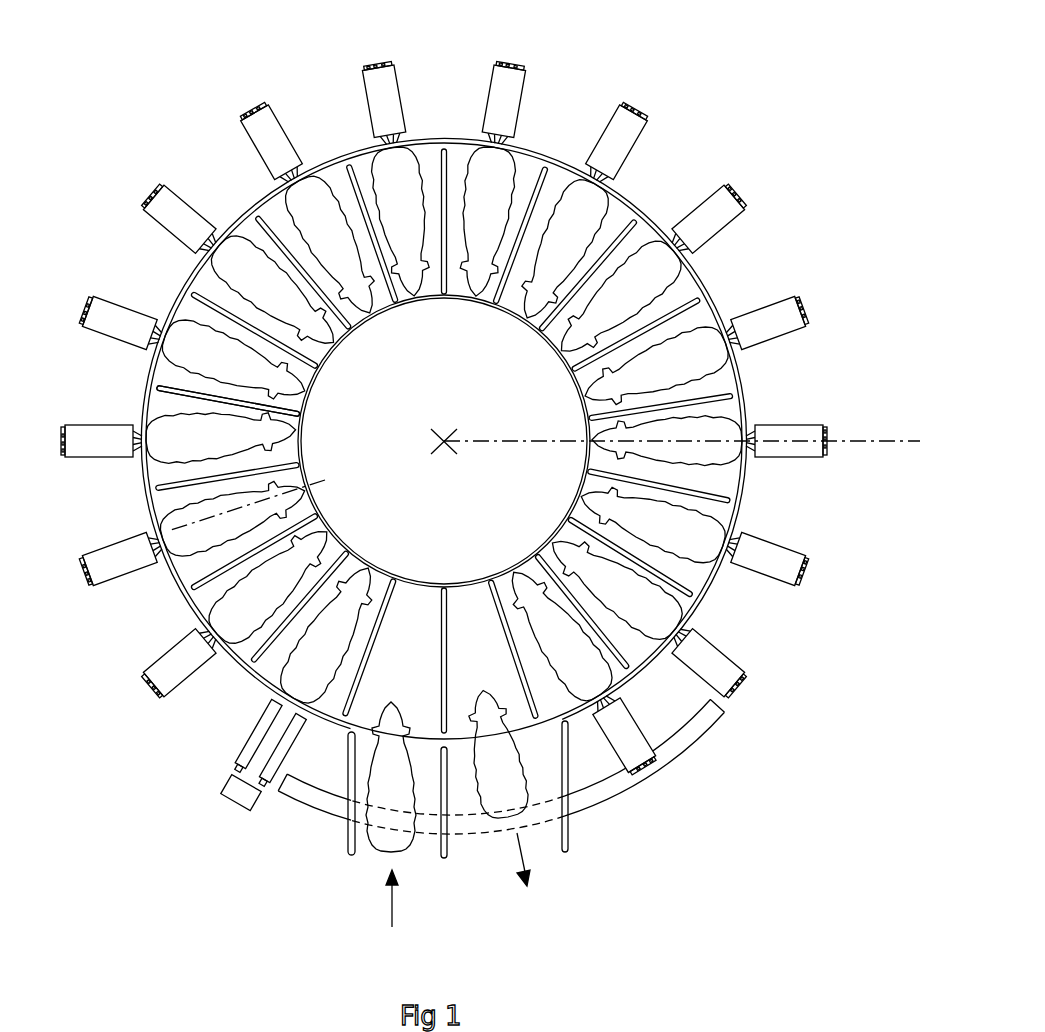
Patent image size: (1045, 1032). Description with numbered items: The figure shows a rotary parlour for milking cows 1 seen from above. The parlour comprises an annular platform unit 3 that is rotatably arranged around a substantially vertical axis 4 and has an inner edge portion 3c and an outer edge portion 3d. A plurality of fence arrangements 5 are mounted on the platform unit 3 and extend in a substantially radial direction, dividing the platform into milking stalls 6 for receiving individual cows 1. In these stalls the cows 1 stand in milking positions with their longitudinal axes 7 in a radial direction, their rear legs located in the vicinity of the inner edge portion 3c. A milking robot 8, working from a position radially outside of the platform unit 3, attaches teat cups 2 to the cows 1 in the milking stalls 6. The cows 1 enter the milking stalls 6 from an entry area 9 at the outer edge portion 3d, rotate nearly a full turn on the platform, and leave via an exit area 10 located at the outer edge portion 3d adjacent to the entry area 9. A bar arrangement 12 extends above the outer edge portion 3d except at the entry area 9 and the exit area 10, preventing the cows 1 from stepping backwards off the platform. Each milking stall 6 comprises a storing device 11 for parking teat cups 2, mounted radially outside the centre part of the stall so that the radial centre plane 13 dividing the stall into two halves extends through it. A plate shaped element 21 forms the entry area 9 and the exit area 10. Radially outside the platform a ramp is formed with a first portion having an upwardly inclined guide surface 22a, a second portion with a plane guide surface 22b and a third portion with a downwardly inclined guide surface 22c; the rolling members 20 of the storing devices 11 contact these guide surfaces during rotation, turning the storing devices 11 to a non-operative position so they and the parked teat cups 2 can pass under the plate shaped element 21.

The cow 1 is at (320, 662).
The teat cups 2 is at (688, 635).
The annular platform unit 3 is at (155, 470).
The inner edge portion 3c is at (303, 405).
The outer edge portion 3d is at (187, 272).
The vertical axis 4 is at (444, 441).
The fence arrangements 5 is at (498, 600).
The milking stalls 6 is at (347, 573).
The longitudinal axis 7 is at (193, 532).
The milking robot 8 is at (238, 795).
The entry area 9 is at (368, 760).
The exit area 10 is at (542, 763).
The storing device 11 is at (716, 666).
The bar arrangement 12 is at (723, 310).
The radial centre plane 13 is at (717, 442).
The rolling members 20 is at (745, 695).
The plate shaped element 21 is at (470, 792).
The upwardly inclined guide surface 22a is at (683, 738).
The plane guide surface 22b is at (578, 805).
The downwardly inclined guide surface 22c is at (325, 798).